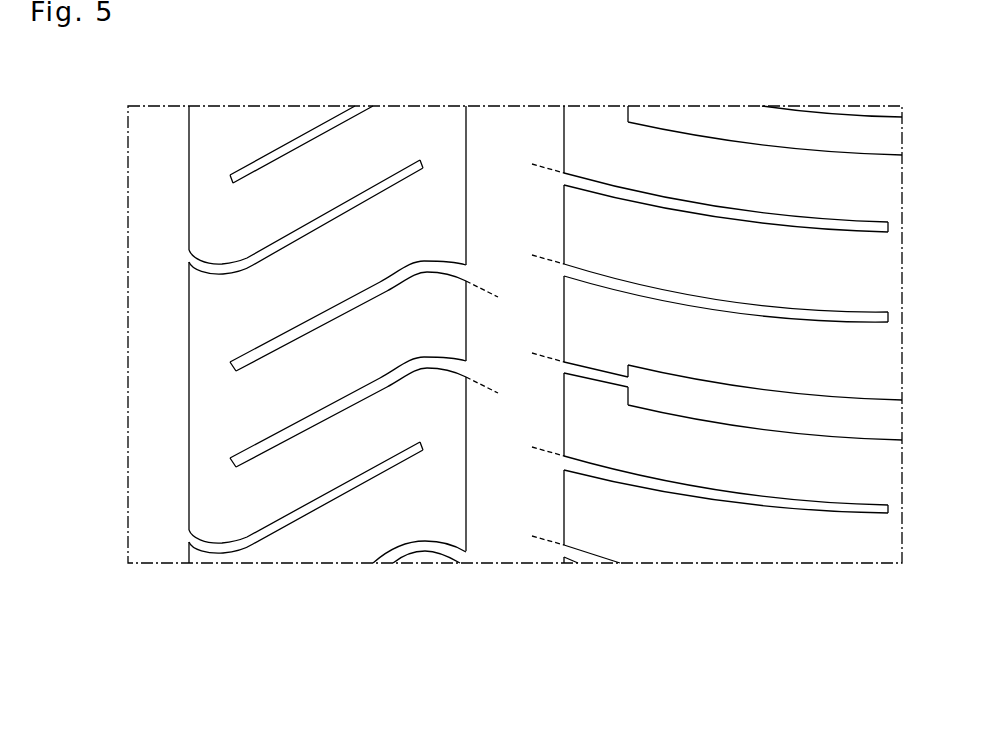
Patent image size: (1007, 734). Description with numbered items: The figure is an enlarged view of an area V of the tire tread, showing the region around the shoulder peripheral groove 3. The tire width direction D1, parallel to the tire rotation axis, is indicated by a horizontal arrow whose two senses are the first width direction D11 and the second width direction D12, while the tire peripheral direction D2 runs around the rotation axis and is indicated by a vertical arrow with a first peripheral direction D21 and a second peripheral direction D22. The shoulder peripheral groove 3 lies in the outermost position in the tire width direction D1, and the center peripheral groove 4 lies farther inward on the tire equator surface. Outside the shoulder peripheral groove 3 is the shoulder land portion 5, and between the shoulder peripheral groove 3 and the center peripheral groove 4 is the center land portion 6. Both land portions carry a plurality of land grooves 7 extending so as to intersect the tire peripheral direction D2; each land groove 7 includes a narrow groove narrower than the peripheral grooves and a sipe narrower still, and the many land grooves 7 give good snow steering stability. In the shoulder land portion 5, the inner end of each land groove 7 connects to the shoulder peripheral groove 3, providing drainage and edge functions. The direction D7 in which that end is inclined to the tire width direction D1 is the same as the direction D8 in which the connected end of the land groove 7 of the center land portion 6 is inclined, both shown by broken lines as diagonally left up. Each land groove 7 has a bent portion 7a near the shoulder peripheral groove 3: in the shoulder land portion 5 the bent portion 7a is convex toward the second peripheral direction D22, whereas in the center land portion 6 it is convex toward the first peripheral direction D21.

The shoulder peripheral groove 3 is at (514, 98).
The center peripheral groove 4 is at (156, 98).
The shoulder land portion 5 is at (614, 98).
The center land portion 6 is at (311, 98).
The land groove 7 is at (402, 200).
The bent portion 7a is at (400, 247).
The area V is at (871, 564).
The tire width direction D1 is at (558, 630).
The first width direction D11 is at (576, 632).
The second width direction D12 is at (459, 632).
The tire peripheral direction D2 is at (926, 292).
The first peripheral direction D21 is at (929, 286).
The second peripheral direction D22 is at (929, 389).
The inclination direction of shoulder land groove end portion D7 is at (548, 173).
The inclination direction of center land groove end portion D8 is at (485, 288).